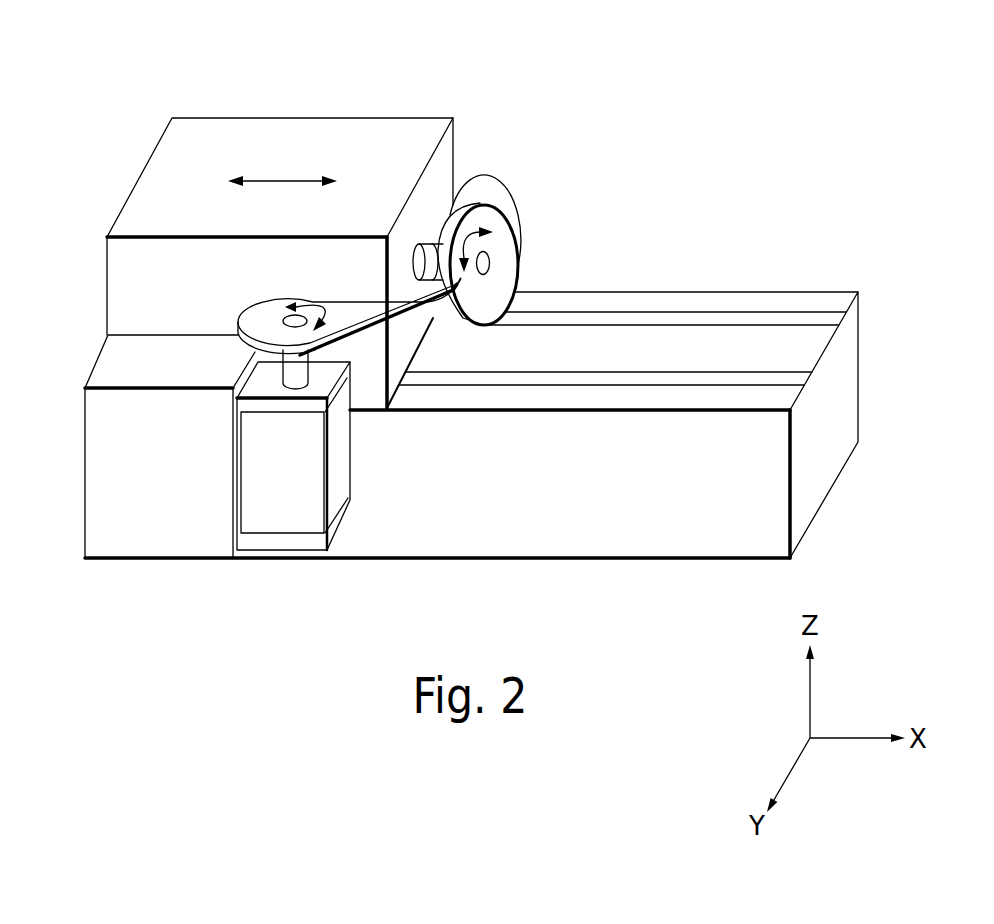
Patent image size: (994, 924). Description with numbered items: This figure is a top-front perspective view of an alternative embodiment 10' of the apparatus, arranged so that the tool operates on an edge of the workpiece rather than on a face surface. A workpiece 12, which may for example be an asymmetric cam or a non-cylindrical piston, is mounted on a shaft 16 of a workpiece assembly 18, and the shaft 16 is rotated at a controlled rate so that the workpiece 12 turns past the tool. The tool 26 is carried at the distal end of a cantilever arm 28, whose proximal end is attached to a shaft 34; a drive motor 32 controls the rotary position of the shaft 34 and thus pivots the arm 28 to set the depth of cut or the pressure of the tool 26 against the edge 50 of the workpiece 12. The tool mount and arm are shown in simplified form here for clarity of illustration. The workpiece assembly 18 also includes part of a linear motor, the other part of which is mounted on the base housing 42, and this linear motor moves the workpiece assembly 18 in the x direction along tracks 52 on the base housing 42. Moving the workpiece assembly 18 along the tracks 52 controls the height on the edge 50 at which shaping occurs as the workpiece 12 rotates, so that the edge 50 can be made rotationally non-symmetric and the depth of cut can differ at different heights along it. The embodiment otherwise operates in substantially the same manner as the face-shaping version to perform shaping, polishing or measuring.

The alternative embodiment apparatus 10' is at (481, 299).
The workpiece 12 is at (502, 206).
The shaft 16 is at (430, 255).
The workpiece assembly 18 is at (327, 104).
The tool 26 is at (460, 282).
The cantilever arm 28 is at (262, 314).
The drive motor 32 is at (343, 456).
The shaft 34 is at (290, 373).
The base housing 42 is at (836, 367).
The edge 50 is at (462, 200).
The tracks 52 is at (780, 318).